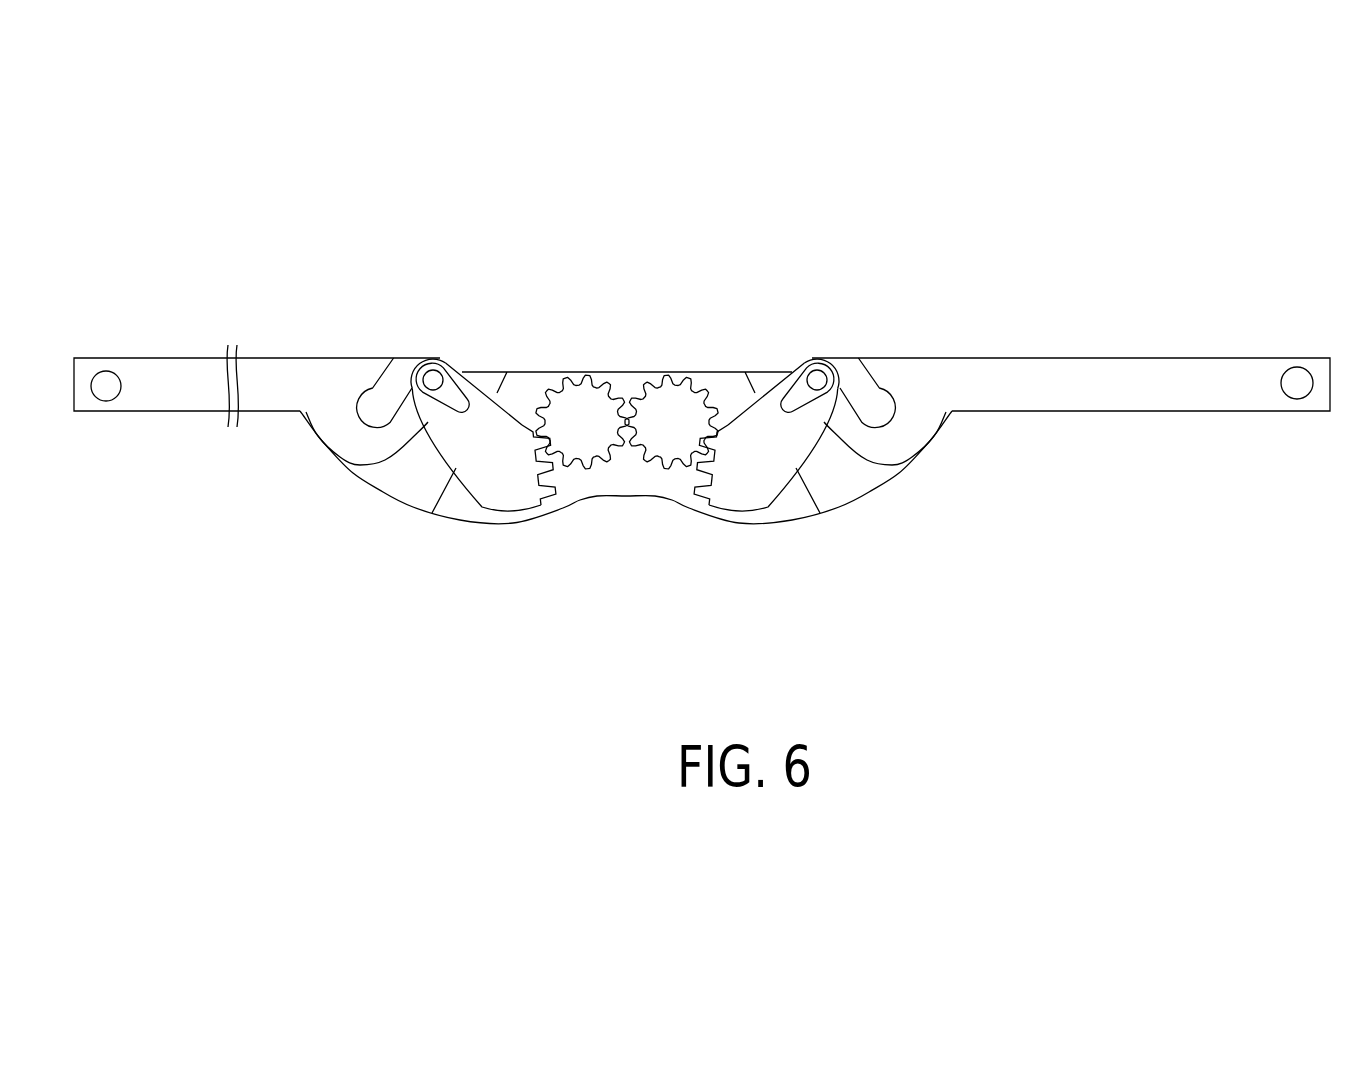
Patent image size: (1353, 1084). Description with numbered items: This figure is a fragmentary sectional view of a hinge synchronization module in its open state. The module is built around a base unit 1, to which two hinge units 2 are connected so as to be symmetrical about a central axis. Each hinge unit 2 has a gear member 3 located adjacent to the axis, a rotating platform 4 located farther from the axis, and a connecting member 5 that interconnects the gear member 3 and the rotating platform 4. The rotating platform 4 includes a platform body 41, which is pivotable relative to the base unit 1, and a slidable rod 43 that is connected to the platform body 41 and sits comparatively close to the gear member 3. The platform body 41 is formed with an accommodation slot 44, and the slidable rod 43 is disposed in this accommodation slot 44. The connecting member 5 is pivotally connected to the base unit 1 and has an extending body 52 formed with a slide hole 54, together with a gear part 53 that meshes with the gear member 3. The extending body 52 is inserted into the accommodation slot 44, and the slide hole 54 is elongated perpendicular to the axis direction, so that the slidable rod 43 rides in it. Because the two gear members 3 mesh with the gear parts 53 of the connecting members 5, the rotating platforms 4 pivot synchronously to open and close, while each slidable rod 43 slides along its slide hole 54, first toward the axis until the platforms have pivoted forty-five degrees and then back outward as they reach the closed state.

The base unit 1 is at (797, 518).
The hinge unit 2 is at (702, 417).
The gear member 3 is at (678, 408).
The rotating platform 4 is at (702, 390).
The platform body 41 is at (145, 372).
The slidable rod 43 is at (433, 370).
The accommodation slot 44 is at (400, 375).
The connecting member 5 is at (625, 453).
The extending body 52 is at (425, 407).
The gear part 53 is at (555, 480).
The slide hole 54 is at (462, 404).